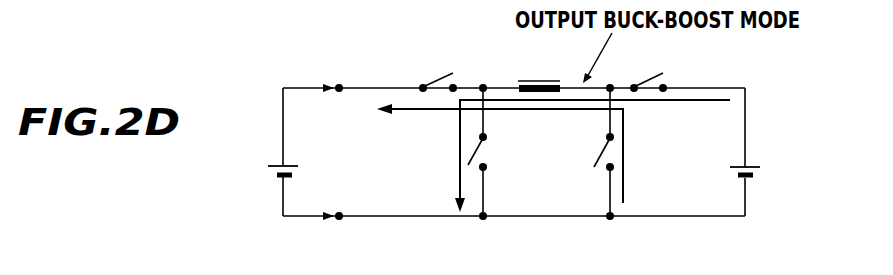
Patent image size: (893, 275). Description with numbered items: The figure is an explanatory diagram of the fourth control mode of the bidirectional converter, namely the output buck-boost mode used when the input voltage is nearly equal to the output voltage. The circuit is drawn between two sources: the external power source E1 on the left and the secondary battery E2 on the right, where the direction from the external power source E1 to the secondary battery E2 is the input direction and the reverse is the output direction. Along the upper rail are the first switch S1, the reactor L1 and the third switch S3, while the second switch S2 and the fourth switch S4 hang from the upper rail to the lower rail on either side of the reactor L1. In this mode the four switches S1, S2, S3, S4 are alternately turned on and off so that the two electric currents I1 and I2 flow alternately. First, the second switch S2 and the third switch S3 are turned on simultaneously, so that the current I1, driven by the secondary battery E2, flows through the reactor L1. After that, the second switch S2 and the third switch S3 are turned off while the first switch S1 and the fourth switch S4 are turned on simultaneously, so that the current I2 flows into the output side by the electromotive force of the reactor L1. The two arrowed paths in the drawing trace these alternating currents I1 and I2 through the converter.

The external power source E1 is at (273, 159).
The secondary battery E2 is at (754, 159).
The first switch S1 is at (438, 71).
The second switch S2 is at (491, 152).
The third switch S3 is at (648, 71).
The fourth switch S4 is at (589, 152).
The reactor L1 is at (539, 71).
The current I1 is at (592, 156).
The current I2 is at (500, 153).